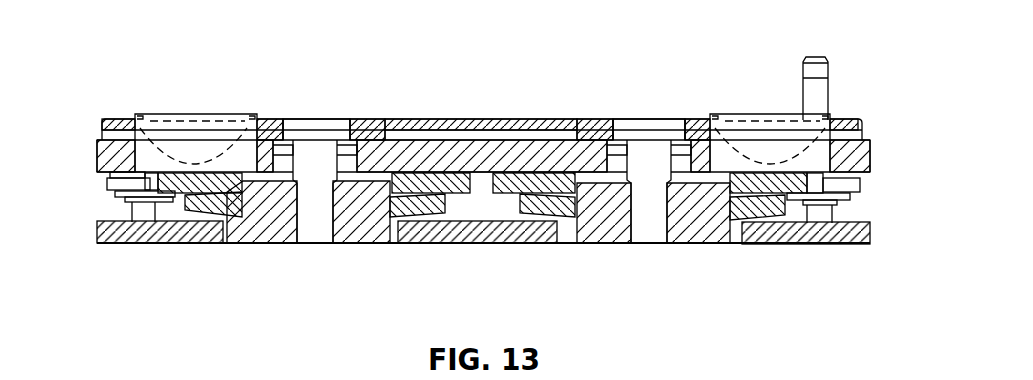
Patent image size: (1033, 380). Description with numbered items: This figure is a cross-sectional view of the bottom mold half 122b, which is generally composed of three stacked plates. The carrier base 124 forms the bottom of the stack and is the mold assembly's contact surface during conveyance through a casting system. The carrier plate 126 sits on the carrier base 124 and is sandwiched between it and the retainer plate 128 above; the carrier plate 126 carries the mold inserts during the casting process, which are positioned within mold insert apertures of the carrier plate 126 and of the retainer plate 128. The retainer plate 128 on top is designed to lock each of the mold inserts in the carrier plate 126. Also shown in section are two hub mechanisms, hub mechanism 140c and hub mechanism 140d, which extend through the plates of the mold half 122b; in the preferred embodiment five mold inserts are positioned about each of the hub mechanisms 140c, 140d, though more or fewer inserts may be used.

The mold half 122b is at (252, 78).
The retainer plate 128 is at (102, 123).
The carrier plate 126 is at (97, 152).
The carrier base 124 is at (134, 244).
The hub mechanism 140c is at (266, 245).
The hub mechanism 140d is at (695, 244).